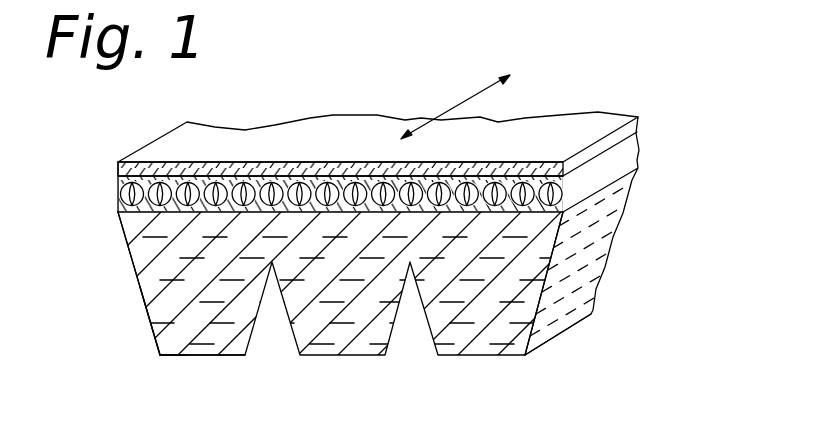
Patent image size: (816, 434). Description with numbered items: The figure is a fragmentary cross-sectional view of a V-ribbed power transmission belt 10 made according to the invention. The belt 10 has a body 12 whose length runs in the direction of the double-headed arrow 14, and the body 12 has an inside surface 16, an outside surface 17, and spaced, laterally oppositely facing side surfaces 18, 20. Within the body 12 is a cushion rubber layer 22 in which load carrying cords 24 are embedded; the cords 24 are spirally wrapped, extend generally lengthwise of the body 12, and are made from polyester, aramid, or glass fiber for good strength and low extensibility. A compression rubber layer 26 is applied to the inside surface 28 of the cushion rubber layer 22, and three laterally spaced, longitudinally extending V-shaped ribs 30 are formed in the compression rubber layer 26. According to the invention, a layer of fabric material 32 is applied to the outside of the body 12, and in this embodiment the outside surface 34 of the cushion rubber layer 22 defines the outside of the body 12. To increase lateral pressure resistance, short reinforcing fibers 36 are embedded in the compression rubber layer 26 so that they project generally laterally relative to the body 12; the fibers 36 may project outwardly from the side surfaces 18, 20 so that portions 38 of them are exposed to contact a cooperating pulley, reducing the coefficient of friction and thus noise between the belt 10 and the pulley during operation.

The power transmission belt 10 is at (538, 141).
The body 12 is at (636, 183).
The double-headed arrow 14 is at (443, 115).
The inside surface 16 is at (183, 358).
The outside surface 17 is at (212, 173).
The side surface 18 is at (138, 275).
The side surface 20 is at (595, 237).
The cushion rubber layer 22 is at (118, 205).
The load carrying cords 24 is at (132, 188).
The compression rubber layer 26 is at (163, 324).
The inside surface 28 is at (135, 215).
The V-shaped ribs 30 is at (220, 357).
The layer of fabric material 32 is at (273, 173).
The outside surface 34 is at (322, 175).
The reinforcing fibers 36 is at (160, 357).
The exposed portions 38 is at (588, 262).